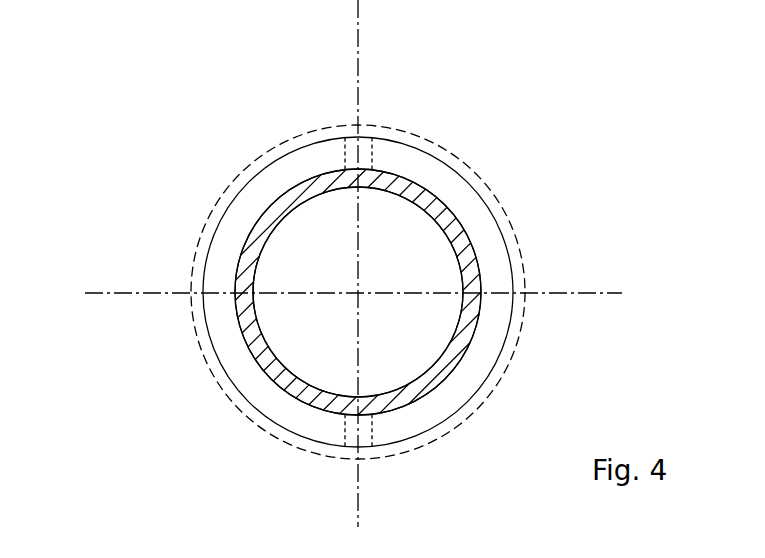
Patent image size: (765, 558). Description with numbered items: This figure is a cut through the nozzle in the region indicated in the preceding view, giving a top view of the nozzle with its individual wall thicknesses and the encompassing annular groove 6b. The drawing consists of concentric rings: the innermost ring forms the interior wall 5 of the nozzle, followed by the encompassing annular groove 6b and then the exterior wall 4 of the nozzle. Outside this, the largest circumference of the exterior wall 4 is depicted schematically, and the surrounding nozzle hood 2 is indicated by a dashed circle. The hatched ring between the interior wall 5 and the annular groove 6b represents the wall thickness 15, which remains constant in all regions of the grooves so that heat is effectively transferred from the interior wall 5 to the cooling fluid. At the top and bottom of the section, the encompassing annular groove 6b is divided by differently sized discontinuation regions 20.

The nozzle hood 2 is at (280, 146).
The exterior wall 4 is at (458, 172).
The interior wall 5 is at (292, 213).
The annular groove 6b is at (477, 242).
The wall thickness 15 is at (408, 188).
The discontinuation regions 20 is at (362, 153).